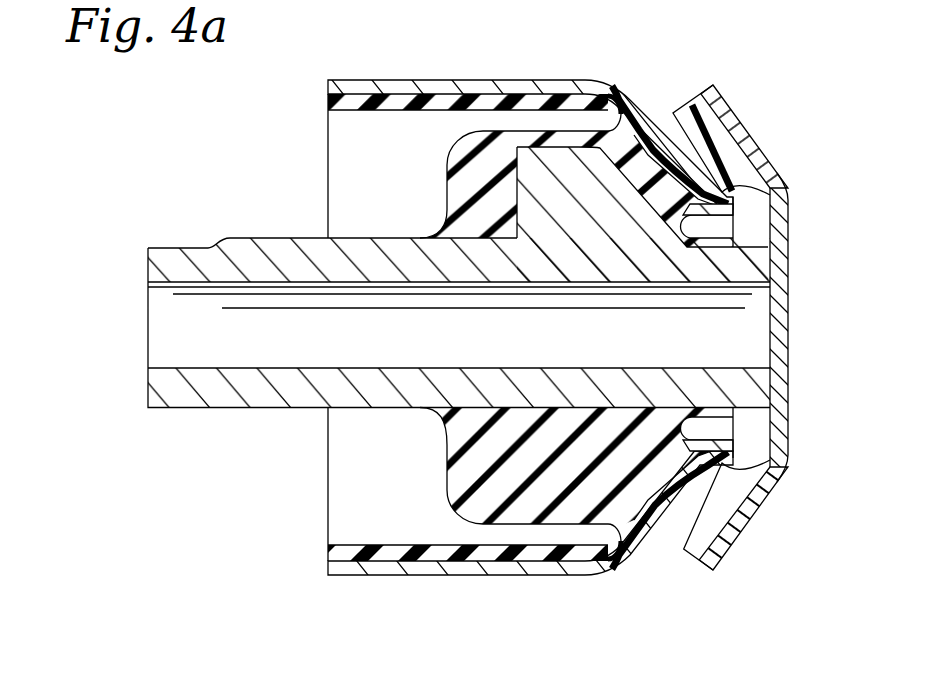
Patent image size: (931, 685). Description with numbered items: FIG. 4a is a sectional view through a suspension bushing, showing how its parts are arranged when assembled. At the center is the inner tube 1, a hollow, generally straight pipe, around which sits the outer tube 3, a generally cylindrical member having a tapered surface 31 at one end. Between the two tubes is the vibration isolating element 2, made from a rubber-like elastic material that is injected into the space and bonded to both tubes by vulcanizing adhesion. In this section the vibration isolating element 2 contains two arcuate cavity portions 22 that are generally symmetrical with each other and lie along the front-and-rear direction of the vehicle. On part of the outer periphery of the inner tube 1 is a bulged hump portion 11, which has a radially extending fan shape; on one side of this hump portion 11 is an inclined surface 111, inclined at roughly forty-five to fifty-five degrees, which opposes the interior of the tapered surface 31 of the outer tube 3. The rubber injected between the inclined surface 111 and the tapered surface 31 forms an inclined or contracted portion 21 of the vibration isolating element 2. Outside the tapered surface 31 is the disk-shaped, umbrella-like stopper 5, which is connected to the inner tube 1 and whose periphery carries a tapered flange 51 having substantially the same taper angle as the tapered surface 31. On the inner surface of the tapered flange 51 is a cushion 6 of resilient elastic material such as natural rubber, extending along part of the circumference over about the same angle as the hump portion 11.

The inner tube 1 is at (217, 395).
The vibration isolating element 2 is at (455, 490).
The outer tube 3 is at (521, 582).
The stopper 5 is at (794, 226).
The cushion 6 is at (678, 112).
The hump portion 11 is at (551, 150).
The inclined or contracted portion 21 is at (624, 128).
The cavity portions 22 is at (506, 102).
The tapered surface 31 is at (647, 530).
The tapered flange 51 is at (748, 122).
The inclined surface 111 is at (629, 166).